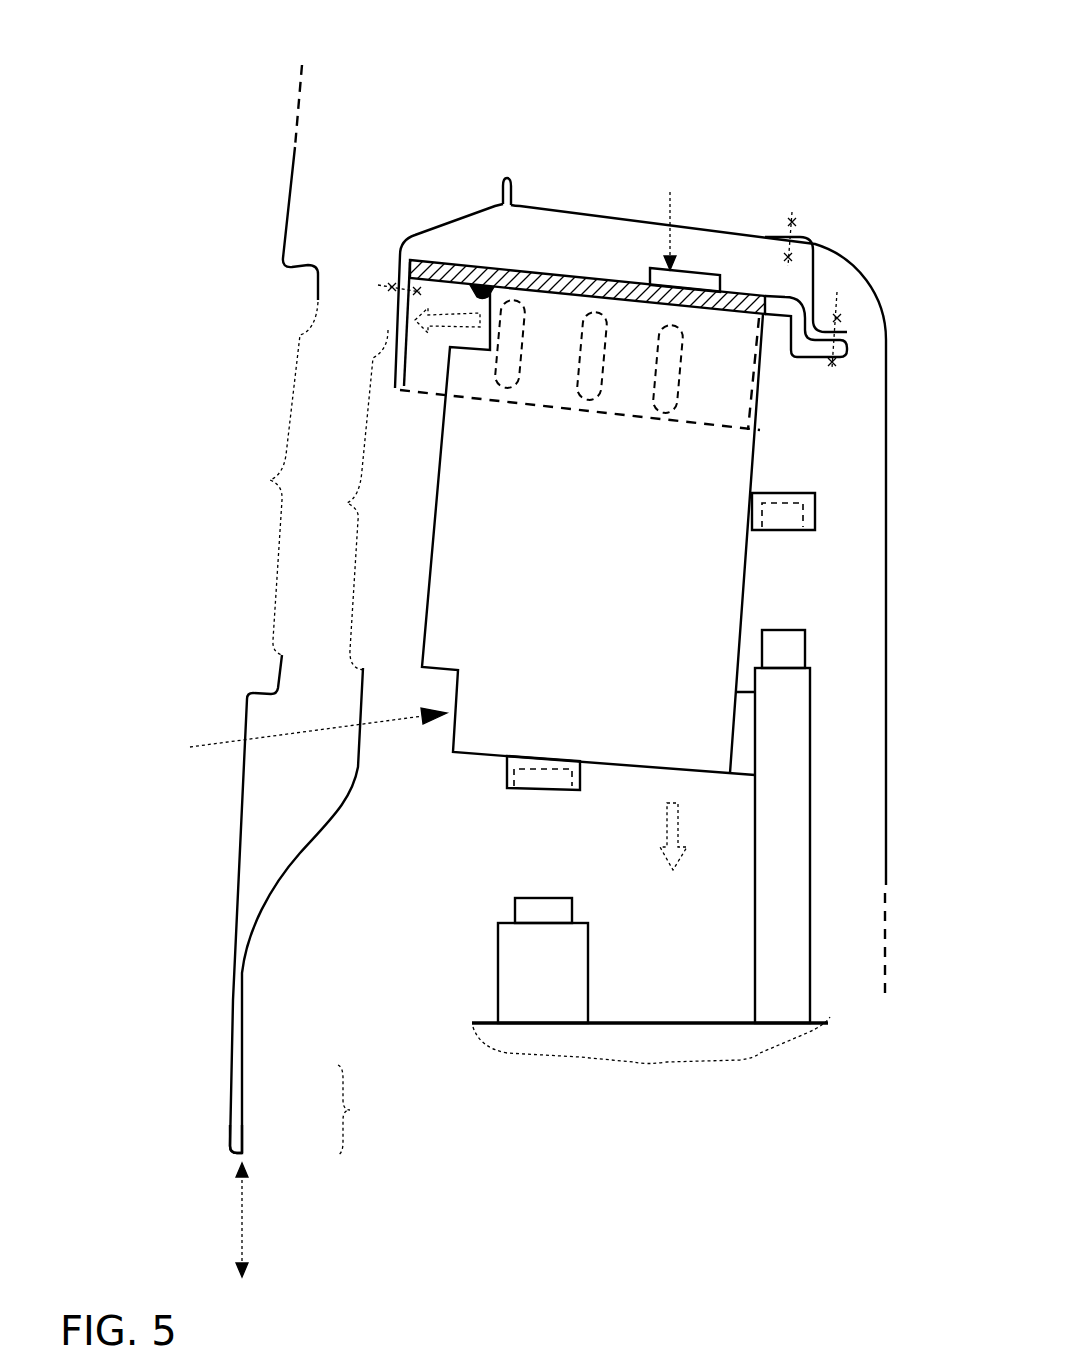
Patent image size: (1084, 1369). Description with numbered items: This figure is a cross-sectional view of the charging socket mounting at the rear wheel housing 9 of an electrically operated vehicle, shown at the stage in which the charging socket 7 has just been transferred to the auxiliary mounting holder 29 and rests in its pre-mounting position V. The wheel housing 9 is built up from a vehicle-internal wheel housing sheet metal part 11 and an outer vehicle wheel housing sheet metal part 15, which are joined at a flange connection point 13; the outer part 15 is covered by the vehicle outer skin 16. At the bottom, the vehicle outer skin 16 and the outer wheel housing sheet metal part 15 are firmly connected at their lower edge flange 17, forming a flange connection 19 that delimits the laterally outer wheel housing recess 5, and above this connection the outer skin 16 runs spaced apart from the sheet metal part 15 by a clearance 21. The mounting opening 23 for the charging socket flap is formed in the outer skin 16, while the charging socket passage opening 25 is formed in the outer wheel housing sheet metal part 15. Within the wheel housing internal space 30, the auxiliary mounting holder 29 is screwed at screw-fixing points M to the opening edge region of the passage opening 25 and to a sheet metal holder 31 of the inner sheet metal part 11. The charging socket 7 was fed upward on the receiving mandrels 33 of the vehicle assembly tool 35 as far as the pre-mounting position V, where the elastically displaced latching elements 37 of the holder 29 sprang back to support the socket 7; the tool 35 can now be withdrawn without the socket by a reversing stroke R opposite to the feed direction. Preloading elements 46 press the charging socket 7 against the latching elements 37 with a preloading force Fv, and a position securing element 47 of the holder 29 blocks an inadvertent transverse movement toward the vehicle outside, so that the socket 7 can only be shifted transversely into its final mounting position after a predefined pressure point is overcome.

The lateral wheel housing recess 5 is at (242, 1220).
The charging socket 7 is at (584, 565).
The rear wheel housing 9 is at (488, 48).
The vehicle-internal wheel housing sheet metal part 11 is at (568, 212).
The flange connection point 13 is at (506, 180).
The outer vehicle wheel housing sheet metal part 15 is at (472, 215).
The vehicle outer skin 16 is at (289, 203).
The lower edge flange 17 is at (242, 1132).
The flange connection 19 is at (360, 1110).
The clearance 21 is at (248, 863).
The mounting opening 23 is at (274, 478).
The charging socket passage opening 25 is at (347, 500).
The auxiliary mounting holder 29 is at (786, 394).
The wheel housing internal space 30 is at (345, 940).
The sheet metal holder 31 is at (813, 285).
The receiving mandrels 33 is at (500, 975).
The vehicle assembly tool 35 is at (647, 1065).
The latching elements 37 is at (614, 380).
The preloading elements 46 is at (695, 280).
The position securing element 47 is at (480, 288).
The screw-fixing points M is at (378, 285).
The pre-mounting position V is at (302, 738).
The reversing stroke R is at (672, 830).
The preloading force Fv is at (668, 243).